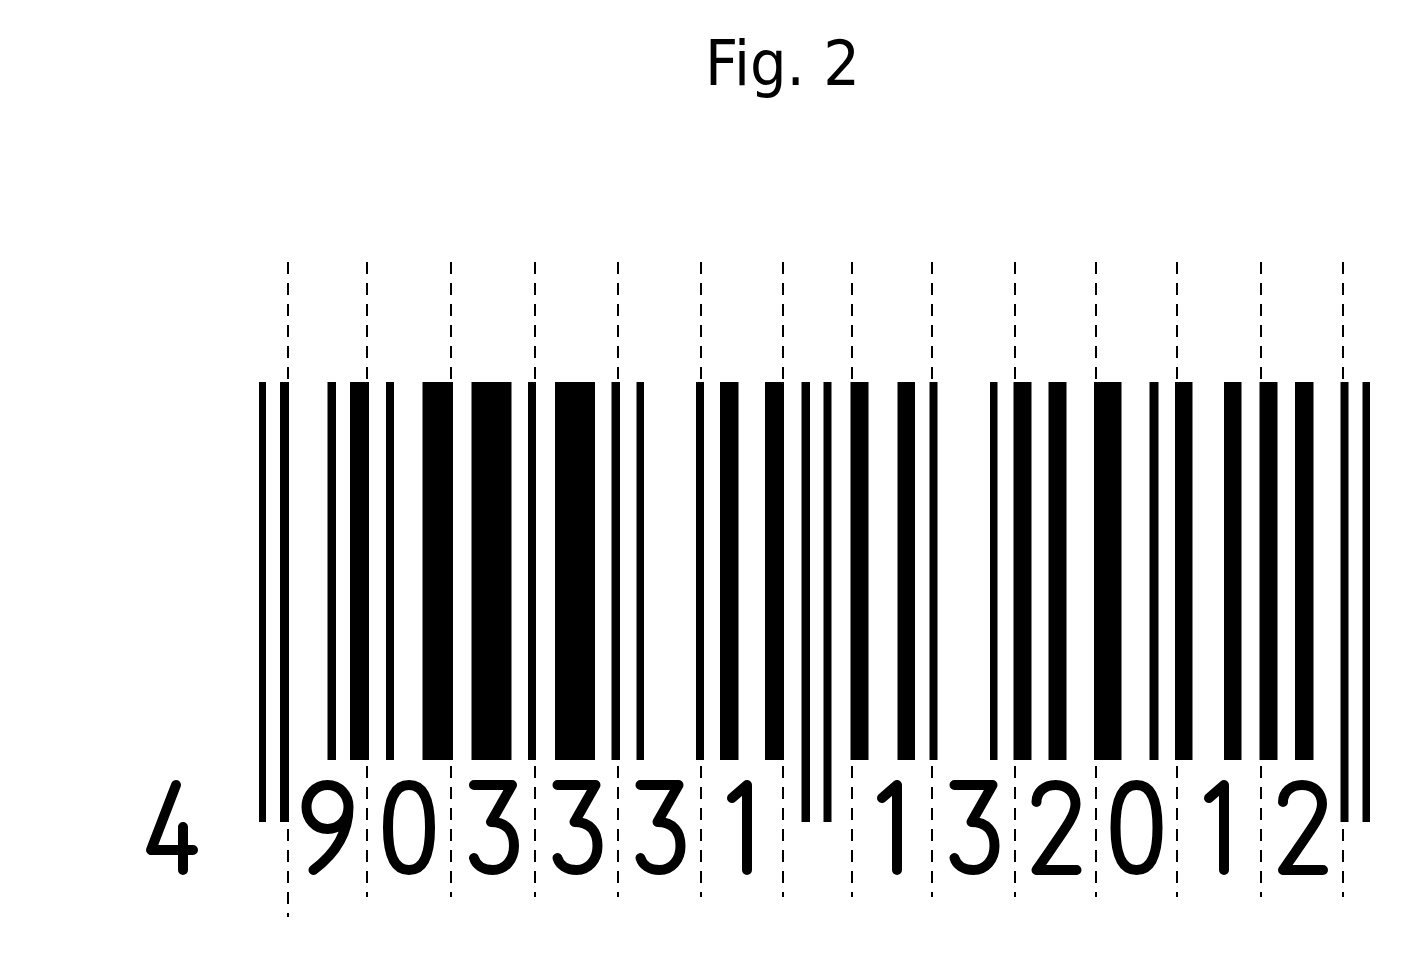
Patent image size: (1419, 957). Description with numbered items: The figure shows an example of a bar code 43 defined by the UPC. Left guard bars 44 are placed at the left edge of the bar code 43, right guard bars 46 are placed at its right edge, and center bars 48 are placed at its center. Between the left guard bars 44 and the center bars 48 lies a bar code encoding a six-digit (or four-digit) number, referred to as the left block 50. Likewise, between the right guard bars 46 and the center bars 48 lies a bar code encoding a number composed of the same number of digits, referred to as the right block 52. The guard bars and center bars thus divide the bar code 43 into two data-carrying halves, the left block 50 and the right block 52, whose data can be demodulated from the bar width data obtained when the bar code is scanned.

The bar code 43 is at (800, 157).
The left guard bars 44 is at (169, 262).
The right guard bars 46 is at (1343, 262).
The center bars 48 is at (783, 262).
The left block 50 is at (288, 262).
The right block 52 is at (1343, 262).